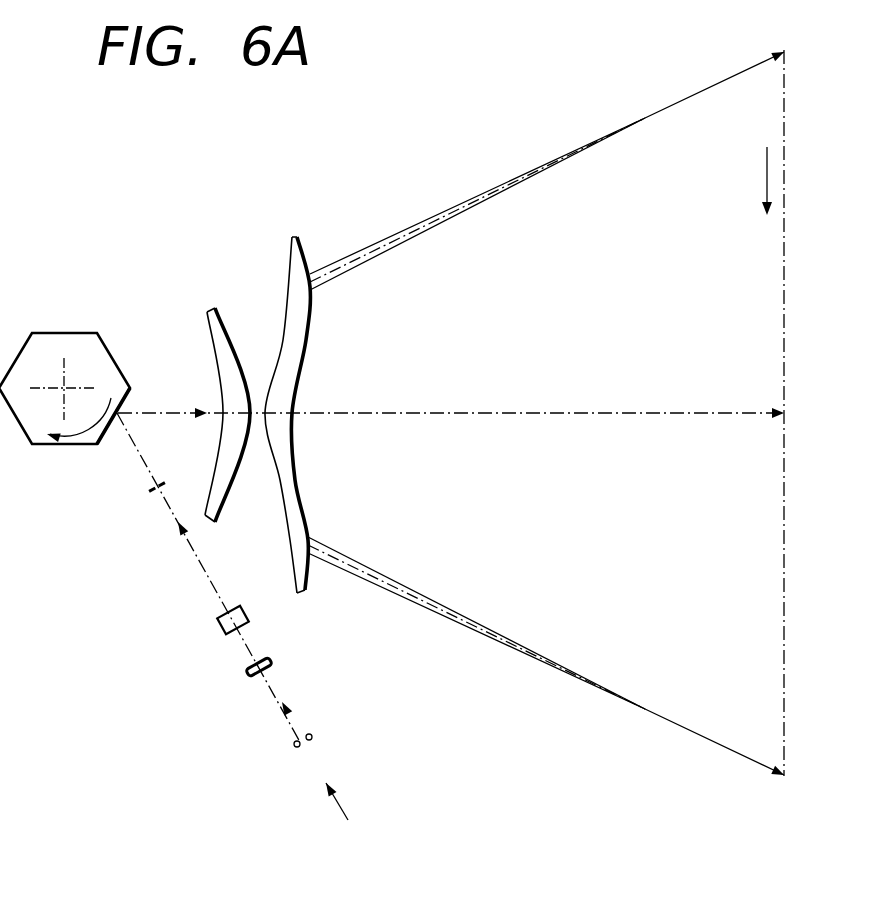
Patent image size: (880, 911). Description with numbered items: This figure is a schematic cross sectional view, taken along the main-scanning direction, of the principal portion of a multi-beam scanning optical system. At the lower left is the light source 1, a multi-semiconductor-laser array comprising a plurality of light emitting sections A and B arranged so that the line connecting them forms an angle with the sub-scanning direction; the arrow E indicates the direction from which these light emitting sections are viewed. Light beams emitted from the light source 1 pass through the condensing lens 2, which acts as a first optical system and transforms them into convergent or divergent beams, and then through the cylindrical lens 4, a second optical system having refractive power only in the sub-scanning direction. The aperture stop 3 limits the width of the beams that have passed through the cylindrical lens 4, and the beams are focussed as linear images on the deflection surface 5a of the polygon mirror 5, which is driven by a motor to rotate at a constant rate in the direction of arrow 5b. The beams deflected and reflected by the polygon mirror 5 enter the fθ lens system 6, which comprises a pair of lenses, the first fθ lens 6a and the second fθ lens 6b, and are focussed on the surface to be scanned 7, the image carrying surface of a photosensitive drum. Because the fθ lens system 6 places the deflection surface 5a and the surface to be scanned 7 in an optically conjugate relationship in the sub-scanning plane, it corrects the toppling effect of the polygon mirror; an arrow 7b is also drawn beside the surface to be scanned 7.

The light source 1 is at (303, 737).
The condensing lens 2 is at (250, 676).
The aperture stop 3 is at (150, 493).
The cylindrical lens 4 is at (220, 626).
The polygon mirror 5 is at (60, 333).
The deflection surface 5a is at (122, 402).
The arrow 5b is at (82, 433).
The fθ lens system 6 is at (287, 180).
The first fθ lens 6a is at (211, 309).
The second fθ lens 6b is at (294, 236).
The surface to be scanned 7 is at (786, 95).
The sub-scanning direction 7b is at (766, 175).
The light emitting section A is at (313, 740).
The light emitting section B is at (293, 746).
The arrow E is at (344, 815).